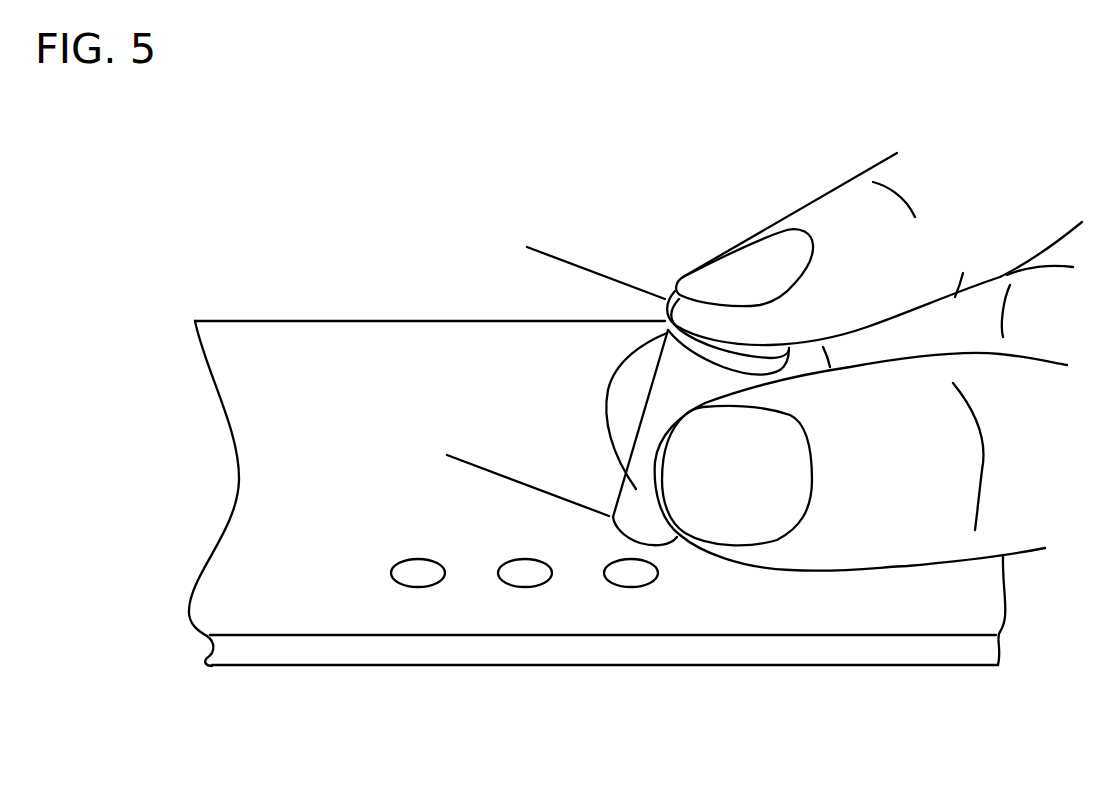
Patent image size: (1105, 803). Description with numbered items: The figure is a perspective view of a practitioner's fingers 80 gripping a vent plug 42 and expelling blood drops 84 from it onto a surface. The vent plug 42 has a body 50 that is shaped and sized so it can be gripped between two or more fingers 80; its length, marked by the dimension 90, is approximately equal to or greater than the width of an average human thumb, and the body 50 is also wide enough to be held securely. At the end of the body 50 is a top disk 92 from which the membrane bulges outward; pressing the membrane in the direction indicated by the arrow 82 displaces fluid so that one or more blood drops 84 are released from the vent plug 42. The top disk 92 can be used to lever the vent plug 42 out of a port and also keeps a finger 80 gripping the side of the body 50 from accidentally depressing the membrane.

The vent plug 42 is at (632, 488).
The body 50 is at (670, 392).
The fingers 80 is at (907, 566).
The pressing direction 82 is at (752, 235).
The blood drops 84 is at (417, 575).
The height dimension 90 is at (457, 460).
The top disk 92 is at (655, 300).